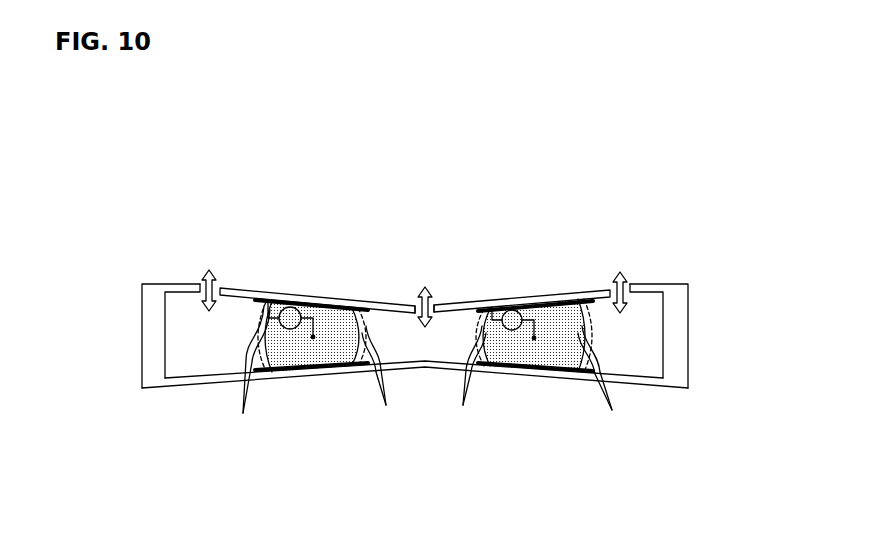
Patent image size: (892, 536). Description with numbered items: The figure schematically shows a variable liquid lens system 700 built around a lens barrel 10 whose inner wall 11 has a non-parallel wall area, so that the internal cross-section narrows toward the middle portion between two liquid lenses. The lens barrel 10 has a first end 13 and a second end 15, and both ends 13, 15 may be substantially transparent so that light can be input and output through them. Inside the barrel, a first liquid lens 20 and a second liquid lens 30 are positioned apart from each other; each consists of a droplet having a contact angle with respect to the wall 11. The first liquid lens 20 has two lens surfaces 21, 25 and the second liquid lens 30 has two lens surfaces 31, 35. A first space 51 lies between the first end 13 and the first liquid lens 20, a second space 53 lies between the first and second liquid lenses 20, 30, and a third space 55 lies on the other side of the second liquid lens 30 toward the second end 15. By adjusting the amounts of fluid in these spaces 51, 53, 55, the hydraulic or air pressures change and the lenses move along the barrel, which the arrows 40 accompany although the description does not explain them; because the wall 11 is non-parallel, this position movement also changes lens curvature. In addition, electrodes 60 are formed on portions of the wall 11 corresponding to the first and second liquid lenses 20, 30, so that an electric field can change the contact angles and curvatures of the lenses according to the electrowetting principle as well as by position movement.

The variable liquid lens system 700 is at (714, 184).
The lens barrel 10 is at (689, 284).
The wall 11 is at (386, 312).
The first end 13 is at (142, 338).
The second end 15 is at (688, 338).
The first liquid lens 20 is at (323, 305).
The lens surface 21 is at (250, 373).
The lens surface 25 is at (328, 375).
The second liquid lens 30 is at (547, 303).
The lens surface 31 is at (469, 375).
The lens surface 35 is at (550, 381).
The movement direction arrow 40 is at (219, 287).
The first space 51 is at (206, 343).
The second space 53 is at (416, 347).
The third space 55 is at (614, 343).
The electrode 60 is at (312, 371).